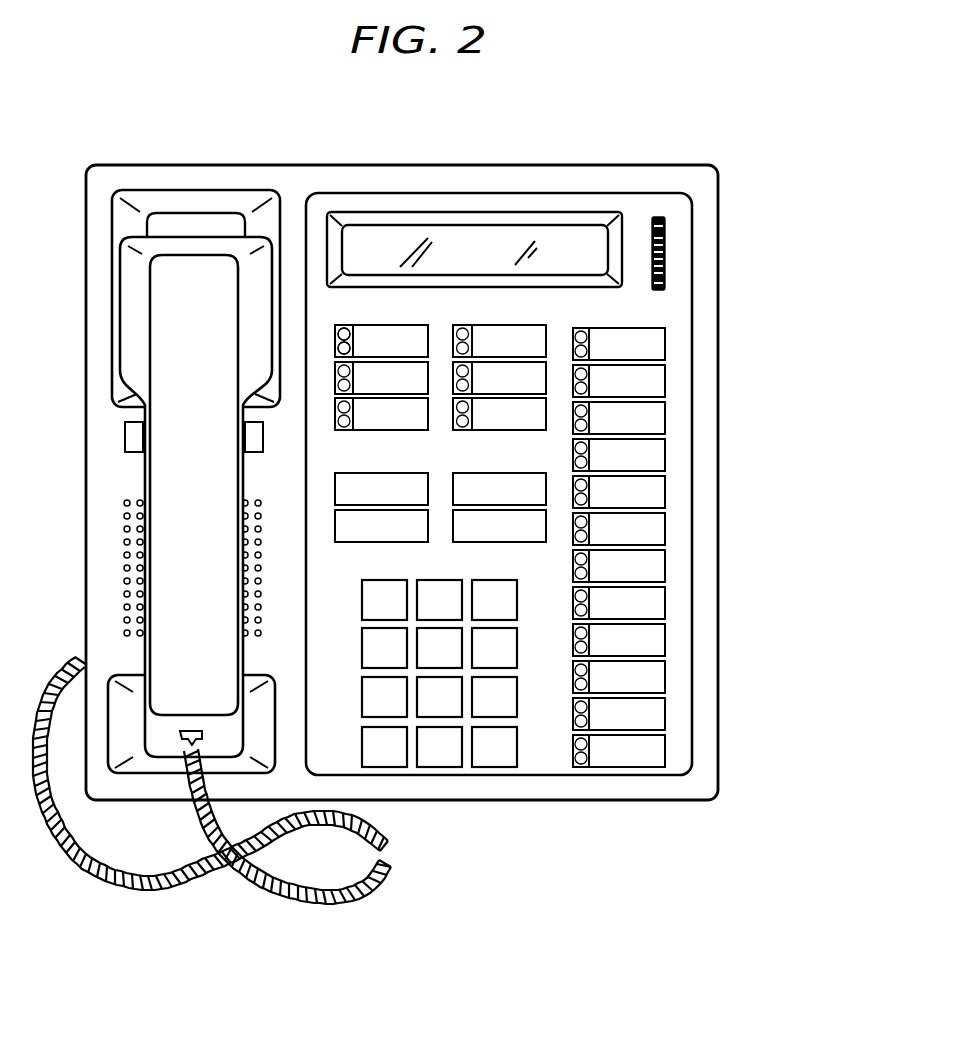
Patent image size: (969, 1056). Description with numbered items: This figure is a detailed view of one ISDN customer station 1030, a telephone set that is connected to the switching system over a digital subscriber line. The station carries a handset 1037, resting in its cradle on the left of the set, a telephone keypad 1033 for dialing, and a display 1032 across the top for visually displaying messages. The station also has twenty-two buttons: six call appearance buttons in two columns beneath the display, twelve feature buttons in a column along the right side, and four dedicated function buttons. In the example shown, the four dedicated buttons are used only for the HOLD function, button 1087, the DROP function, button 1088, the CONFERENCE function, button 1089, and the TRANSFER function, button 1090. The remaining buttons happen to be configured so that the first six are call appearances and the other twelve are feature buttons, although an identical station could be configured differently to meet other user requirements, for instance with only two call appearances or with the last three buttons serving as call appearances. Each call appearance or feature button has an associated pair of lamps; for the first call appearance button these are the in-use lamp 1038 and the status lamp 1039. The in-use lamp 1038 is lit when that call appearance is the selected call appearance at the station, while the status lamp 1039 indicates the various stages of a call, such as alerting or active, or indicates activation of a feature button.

The ISDN customer station 1030 is at (412, 167).
The display 1032 is at (578, 235).
The telephone keypad 1033 is at (518, 770).
The handset 1037 is at (219, 242).
The in-use lamp 1038 is at (338, 329).
The status lamp 1039 is at (338, 348).
The HOLD button 1087 is at (483, 542).
The DROP button 1088 is at (383, 542).
The CONFERENCE button 1089 is at (385, 473).
The TRANSFER button 1090 is at (533, 505).